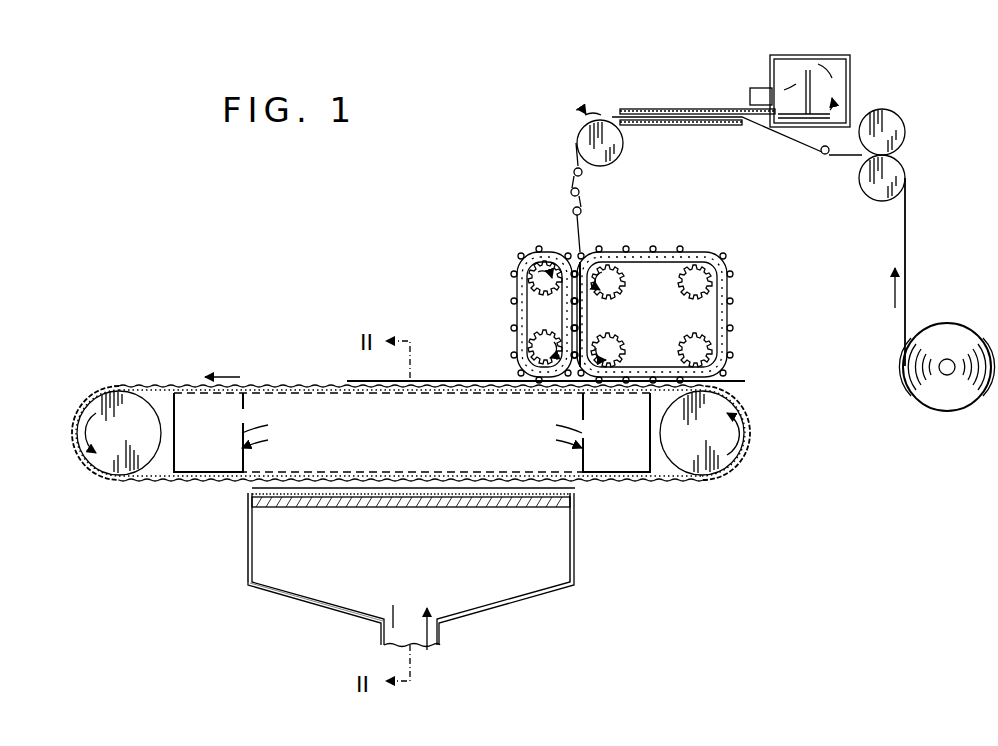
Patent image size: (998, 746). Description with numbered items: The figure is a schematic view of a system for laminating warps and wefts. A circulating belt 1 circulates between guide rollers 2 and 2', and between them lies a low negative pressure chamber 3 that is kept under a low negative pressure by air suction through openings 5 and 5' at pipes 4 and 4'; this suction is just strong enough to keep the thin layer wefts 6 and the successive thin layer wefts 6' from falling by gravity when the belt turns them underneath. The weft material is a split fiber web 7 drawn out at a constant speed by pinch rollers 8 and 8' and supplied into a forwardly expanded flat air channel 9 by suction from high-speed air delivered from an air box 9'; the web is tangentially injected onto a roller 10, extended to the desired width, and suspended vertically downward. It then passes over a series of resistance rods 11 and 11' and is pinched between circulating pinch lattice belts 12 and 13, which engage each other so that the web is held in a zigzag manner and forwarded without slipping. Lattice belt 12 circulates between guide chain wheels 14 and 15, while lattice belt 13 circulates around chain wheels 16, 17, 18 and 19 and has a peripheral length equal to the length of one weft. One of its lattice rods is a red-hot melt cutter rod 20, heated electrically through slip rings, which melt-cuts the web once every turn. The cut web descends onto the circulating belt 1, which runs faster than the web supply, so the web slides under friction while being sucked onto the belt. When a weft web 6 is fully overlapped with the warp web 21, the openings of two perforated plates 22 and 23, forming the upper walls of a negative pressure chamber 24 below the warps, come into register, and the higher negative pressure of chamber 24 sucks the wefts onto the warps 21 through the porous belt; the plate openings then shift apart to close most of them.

The circulating belt 1 is at (155, 385).
The guide roller 2 is at (119, 415).
The guide roller 2' is at (721, 433).
The low negative pressure chamber 3 is at (295, 386).
The pipe 4 is at (203, 455).
The pipe 4' is at (600, 456).
The opening 5 is at (259, 423).
The opening 5' is at (555, 433).
The thin layer wefts 6 is at (236, 535).
The successive thin layer wefts 6' is at (546, 363).
The split fiber web 7 is at (906, 260).
The pinch roller 8 is at (863, 183).
The pinch roller 8' is at (888, 116).
The flat air channel 9 is at (737, 118).
The air box 9' is at (800, 70).
The roller 10 is at (623, 144).
The resistance rod 11 is at (556, 197).
The resistance rod 11' is at (576, 200).
The pinch lattice belt 12 is at (516, 304).
The pinch lattice belt 13 is at (673, 300).
The guide chain wheel 14 is at (530, 264).
The guide chain wheel 15 is at (520, 356).
The chain wheel 16 is at (604, 252).
The chain wheel 17 is at (620, 346).
The chain wheel 18 is at (718, 354).
The chain wheel 19 is at (718, 274).
The melt cutter rod 20 is at (588, 298).
The warp web 21 is at (572, 493).
The perforated plate 22 is at (406, 569).
The perforated plate 23 is at (476, 508).
The negative pressure chamber 24 is at (300, 594).